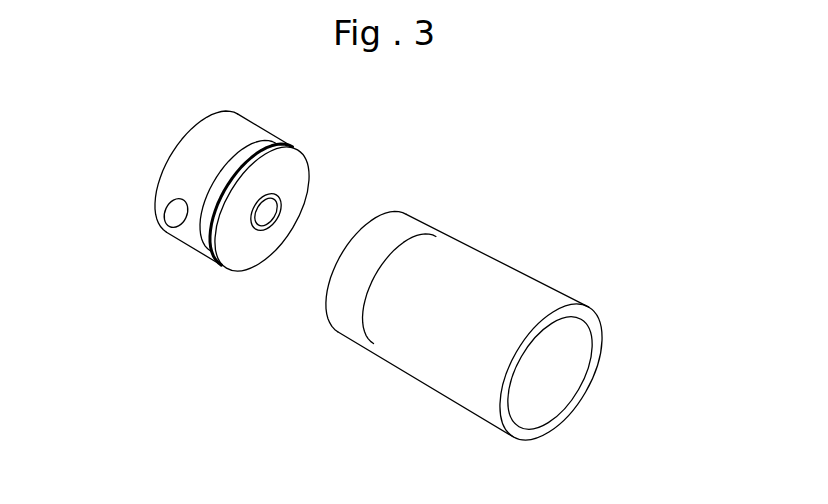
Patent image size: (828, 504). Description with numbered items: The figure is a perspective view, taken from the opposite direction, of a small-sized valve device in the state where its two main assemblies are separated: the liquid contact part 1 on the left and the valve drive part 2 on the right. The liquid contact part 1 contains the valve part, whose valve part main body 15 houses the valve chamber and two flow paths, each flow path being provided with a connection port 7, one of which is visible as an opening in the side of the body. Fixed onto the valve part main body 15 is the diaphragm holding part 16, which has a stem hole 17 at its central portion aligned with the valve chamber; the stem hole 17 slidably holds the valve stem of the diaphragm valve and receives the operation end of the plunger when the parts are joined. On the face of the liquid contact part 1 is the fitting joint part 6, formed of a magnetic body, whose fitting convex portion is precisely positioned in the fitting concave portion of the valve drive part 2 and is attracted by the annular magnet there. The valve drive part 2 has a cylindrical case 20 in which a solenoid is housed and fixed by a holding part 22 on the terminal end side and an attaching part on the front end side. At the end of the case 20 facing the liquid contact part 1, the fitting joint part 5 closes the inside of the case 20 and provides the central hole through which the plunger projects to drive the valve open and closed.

The liquid contact part 1 is at (218, 226).
The valve drive part 2 is at (515, 277).
The fitting joint part 5 is at (410, 213).
The fitting joint part 6 is at (297, 147).
The connection port 7 is at (172, 217).
The valve part main body 15 is at (167, 148).
The diaphragm holding part 16 is at (212, 250).
The stem hole 17 is at (268, 214).
The case 20 is at (533, 283).
The holding part 22 is at (572, 375).